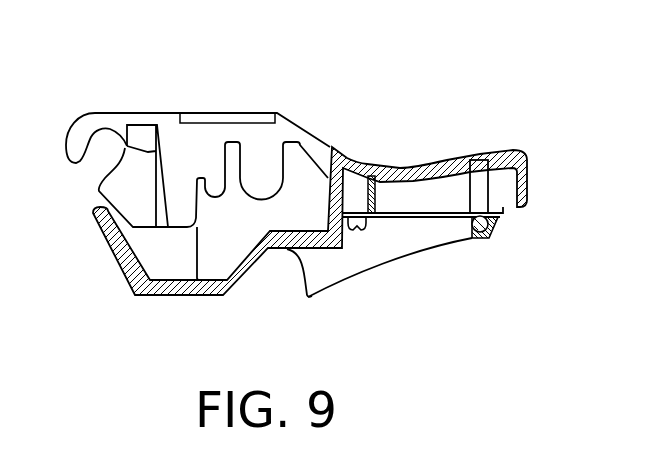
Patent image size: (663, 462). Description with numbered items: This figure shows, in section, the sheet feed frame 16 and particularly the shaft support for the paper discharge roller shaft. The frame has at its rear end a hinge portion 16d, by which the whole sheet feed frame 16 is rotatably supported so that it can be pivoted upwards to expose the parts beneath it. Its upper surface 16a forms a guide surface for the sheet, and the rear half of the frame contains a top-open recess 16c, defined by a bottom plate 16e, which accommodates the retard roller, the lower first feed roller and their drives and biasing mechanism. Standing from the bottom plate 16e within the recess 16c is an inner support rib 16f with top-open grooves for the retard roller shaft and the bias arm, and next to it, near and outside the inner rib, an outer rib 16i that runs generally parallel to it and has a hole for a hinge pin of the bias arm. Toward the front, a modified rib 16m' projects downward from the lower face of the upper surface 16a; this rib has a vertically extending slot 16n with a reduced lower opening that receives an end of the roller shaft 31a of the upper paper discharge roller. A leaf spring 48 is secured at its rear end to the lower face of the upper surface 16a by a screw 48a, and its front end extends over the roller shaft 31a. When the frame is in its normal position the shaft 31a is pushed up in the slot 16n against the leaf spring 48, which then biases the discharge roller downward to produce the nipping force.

The sheet feed frame 16 is at (277, 79).
The upper surface 16a is at (349, 162).
The recess 16c is at (184, 150).
The hinge portion 16d is at (82, 120).
The bottom plate 16e is at (195, 297).
The inner support rib 16f is at (247, 240).
The outer rib 16i is at (185, 265).
The modified rib 16m' is at (395, 267).
The slot 16n is at (480, 180).
The leaf spring 48 is at (417, 211).
The screw 48a is at (358, 232).
The roller shaft 31a is at (481, 234).